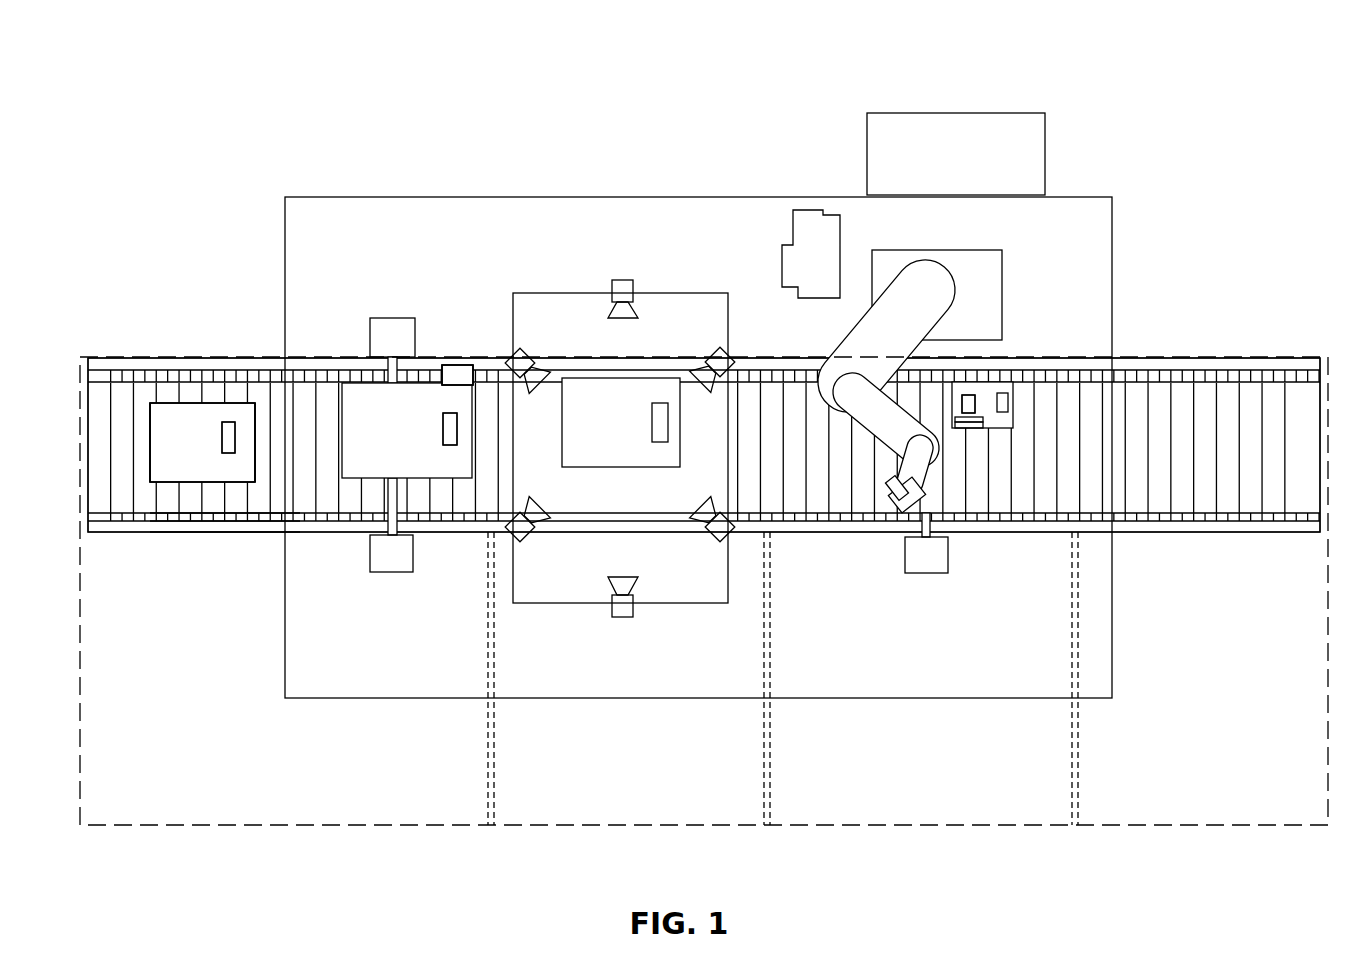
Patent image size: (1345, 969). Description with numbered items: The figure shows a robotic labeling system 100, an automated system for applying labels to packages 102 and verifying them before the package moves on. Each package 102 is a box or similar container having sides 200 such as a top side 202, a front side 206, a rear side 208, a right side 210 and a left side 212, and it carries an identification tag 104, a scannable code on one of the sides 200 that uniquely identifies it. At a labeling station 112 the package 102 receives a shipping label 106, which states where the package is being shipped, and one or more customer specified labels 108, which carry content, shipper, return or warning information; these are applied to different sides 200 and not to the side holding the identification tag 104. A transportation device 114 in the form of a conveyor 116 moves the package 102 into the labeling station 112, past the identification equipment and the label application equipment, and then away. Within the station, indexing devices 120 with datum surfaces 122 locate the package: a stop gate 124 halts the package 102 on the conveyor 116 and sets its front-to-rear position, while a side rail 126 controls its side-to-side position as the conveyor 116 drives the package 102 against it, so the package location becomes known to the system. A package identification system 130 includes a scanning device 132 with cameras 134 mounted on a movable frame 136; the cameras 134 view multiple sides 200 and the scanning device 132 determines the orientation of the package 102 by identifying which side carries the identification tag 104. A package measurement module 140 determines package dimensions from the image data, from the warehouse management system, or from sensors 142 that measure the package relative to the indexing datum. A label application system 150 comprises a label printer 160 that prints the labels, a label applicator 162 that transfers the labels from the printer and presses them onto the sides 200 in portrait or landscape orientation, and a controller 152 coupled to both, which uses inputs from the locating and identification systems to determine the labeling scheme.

The robotic labeling system 100 is at (609, 66).
The package 102 is at (198, 442).
The identification tag 104 is at (228, 427).
The shipping label 106 is at (973, 398).
The customer specified label 108 is at (962, 440).
The labeling station 112 is at (884, 706).
The transportation device 114 is at (101, 417).
The conveyor 116 is at (144, 504).
The indexing device 120 is at (471, 362).
The datum surface 122 is at (464, 452).
The stop gate 124 is at (468, 396).
The side rail 126 is at (445, 378).
The package identification system 130 is at (398, 645).
The scanning device 132 is at (545, 285).
The camera 134 is at (622, 292).
The frame 136 is at (712, 293).
The package measurement module 140 is at (381, 338).
The sensor 142 is at (380, 556).
The label application system 150 is at (850, 648).
The controller 152 is at (1046, 125).
The label printer 160 is at (812, 208).
The label applicator 162 is at (1016, 227).
The side 200 is at (183, 486).
The top side 202 is at (170, 425).
The front side 206 is at (255, 452).
The rear side 208 is at (150, 465).
The right side 210 is at (220, 532).
The left side 212 is at (240, 420).